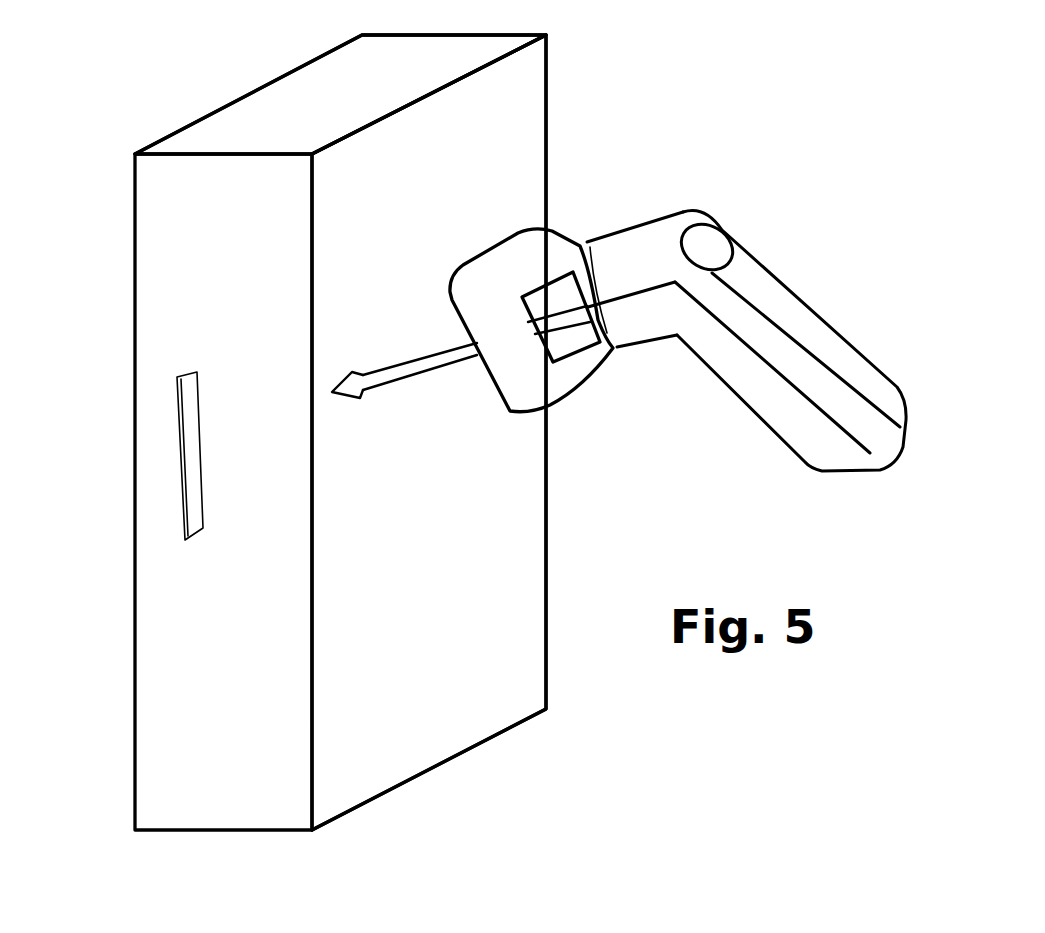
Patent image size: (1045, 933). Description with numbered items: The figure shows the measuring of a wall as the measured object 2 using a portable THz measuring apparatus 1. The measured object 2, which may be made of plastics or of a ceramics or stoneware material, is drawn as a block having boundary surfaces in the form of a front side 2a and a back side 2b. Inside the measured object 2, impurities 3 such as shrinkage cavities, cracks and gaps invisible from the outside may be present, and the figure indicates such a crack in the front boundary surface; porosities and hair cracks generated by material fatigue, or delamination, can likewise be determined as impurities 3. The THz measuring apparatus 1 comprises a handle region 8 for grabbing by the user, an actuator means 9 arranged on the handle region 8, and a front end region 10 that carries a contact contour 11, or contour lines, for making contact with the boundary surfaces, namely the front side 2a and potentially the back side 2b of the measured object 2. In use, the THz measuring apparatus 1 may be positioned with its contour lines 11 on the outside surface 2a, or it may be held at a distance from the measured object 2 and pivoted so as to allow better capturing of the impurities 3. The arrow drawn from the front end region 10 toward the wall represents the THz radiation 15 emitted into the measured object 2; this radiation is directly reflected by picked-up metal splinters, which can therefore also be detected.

The THz measuring apparatus 1 is at (702, 183).
The measured object 2 is at (546, 35).
The front side 2a is at (533, 87).
The back side 2b is at (170, 135).
The impurities 3 is at (183, 527).
The handle region 8 is at (840, 365).
The actuator means 9 is at (721, 243).
The front end region 10 is at (588, 243).
The contact contour 11 is at (508, 250).
The THz radiation 15 is at (407, 375).